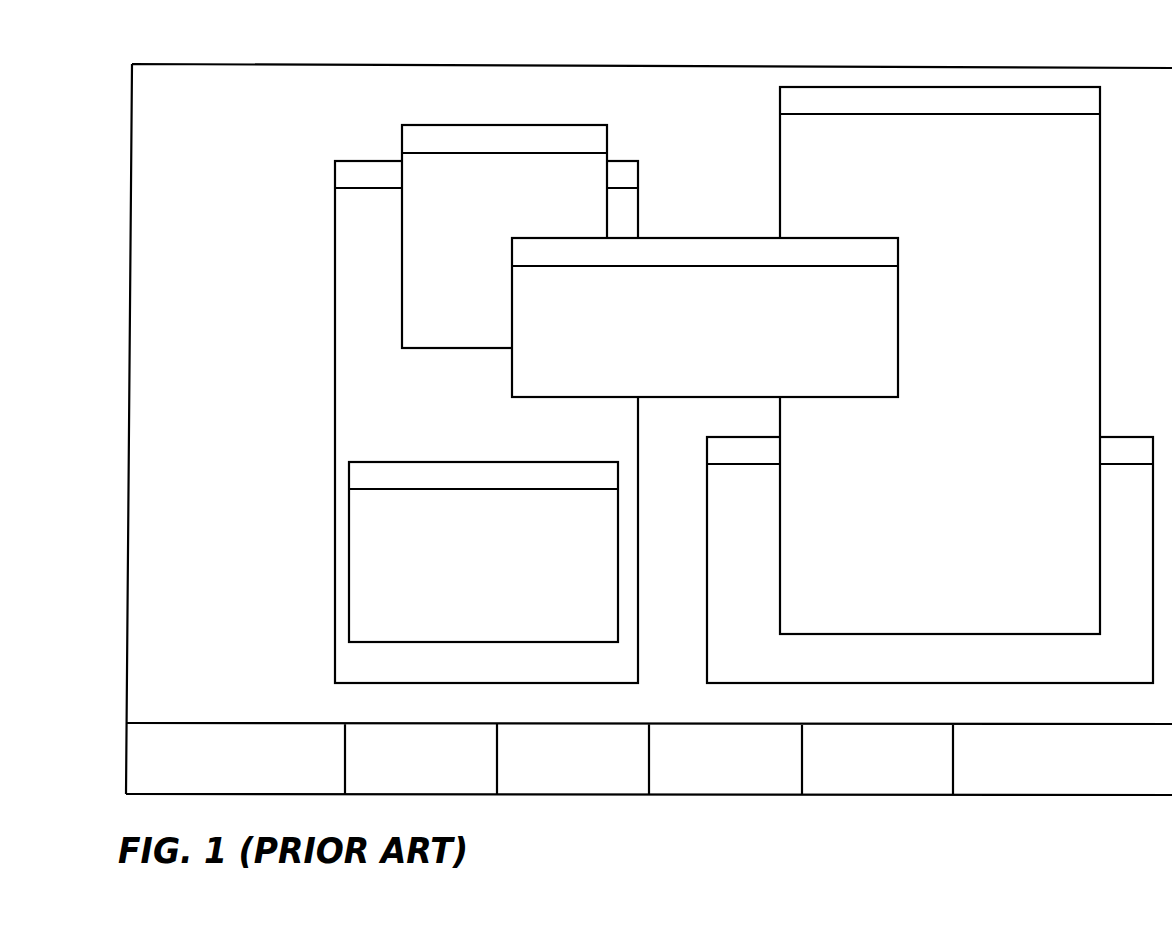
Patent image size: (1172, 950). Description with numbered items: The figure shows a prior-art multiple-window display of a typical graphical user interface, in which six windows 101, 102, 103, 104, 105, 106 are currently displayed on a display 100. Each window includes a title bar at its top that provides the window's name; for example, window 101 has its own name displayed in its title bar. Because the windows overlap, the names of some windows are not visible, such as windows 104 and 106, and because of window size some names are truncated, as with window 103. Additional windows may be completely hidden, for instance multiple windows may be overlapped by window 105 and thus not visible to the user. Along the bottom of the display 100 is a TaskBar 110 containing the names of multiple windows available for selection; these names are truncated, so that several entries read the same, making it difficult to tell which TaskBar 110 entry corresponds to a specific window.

The display 100 is at (690, 64).
The window 101 is at (676, 327).
The window 102 is at (459, 557).
The window 103 is at (480, 198).
The window 104 is at (430, 412).
The window 105 is at (918, 176).
The window 106 is at (908, 672).
The TaskBar 110 is at (695, 808).